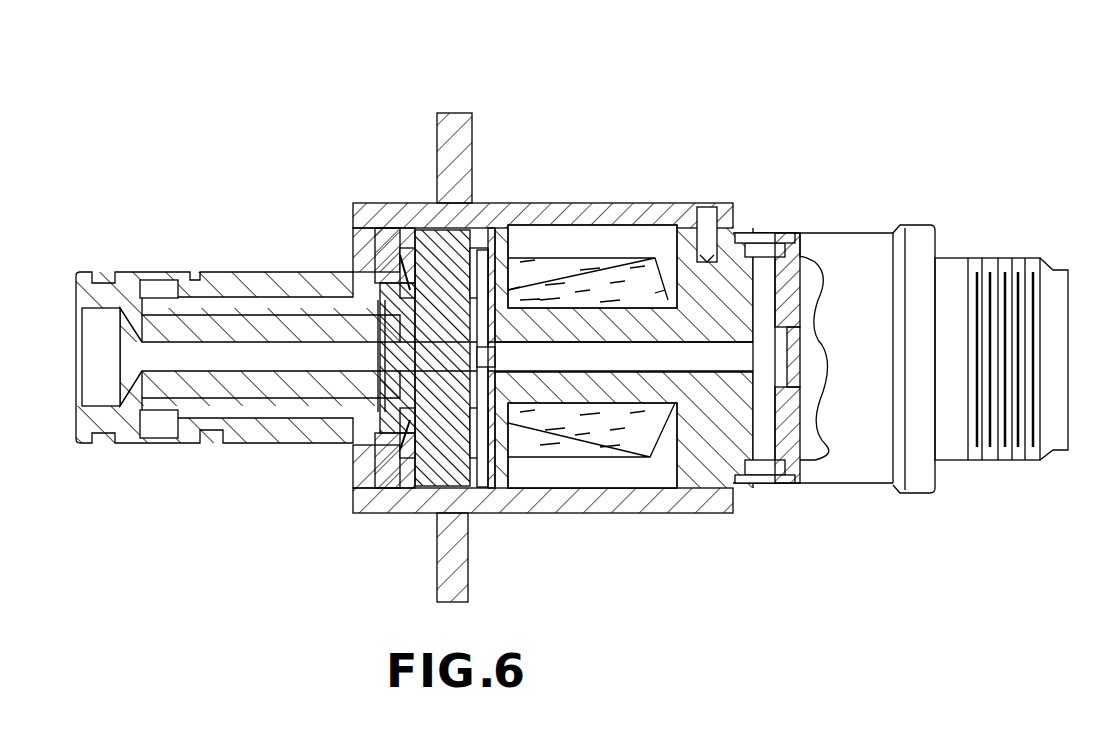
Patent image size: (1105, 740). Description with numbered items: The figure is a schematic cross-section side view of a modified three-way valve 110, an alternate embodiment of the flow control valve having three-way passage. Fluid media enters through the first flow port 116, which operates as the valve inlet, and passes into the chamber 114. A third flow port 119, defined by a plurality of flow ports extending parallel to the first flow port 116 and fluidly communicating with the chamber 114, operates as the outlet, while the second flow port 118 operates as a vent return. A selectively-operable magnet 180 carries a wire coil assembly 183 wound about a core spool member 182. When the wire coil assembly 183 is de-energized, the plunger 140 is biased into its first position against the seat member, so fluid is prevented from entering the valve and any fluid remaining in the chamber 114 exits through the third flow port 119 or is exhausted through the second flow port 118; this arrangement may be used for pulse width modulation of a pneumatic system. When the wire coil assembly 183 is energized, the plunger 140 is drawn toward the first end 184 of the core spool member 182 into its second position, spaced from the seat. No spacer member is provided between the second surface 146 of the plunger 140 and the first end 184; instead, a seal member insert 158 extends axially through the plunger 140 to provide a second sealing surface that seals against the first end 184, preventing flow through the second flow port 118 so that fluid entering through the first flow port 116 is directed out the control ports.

The modified three-way valve 110 is at (883, 82).
The chamber 114 is at (365, 236).
The first flow port 116 is at (178, 363).
The second flow port 118 is at (733, 478).
The third flow port 119 is at (227, 297).
The plunger 140 is at (355, 470).
The second surface 146 is at (493, 450).
The seal member insert 158 is at (373, 400).
The selectively-operable magnet 180 is at (647, 245).
The core spool member 182 is at (600, 397).
The wire coil assembly 183 is at (568, 273).
The first end 184 is at (487, 466).